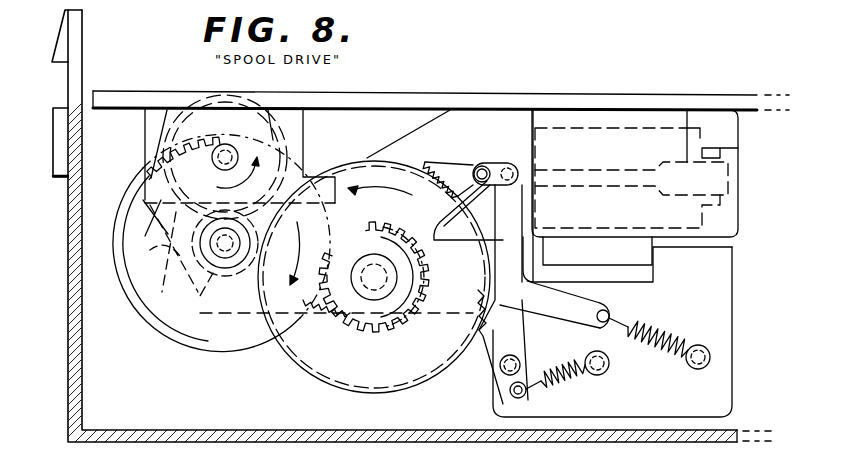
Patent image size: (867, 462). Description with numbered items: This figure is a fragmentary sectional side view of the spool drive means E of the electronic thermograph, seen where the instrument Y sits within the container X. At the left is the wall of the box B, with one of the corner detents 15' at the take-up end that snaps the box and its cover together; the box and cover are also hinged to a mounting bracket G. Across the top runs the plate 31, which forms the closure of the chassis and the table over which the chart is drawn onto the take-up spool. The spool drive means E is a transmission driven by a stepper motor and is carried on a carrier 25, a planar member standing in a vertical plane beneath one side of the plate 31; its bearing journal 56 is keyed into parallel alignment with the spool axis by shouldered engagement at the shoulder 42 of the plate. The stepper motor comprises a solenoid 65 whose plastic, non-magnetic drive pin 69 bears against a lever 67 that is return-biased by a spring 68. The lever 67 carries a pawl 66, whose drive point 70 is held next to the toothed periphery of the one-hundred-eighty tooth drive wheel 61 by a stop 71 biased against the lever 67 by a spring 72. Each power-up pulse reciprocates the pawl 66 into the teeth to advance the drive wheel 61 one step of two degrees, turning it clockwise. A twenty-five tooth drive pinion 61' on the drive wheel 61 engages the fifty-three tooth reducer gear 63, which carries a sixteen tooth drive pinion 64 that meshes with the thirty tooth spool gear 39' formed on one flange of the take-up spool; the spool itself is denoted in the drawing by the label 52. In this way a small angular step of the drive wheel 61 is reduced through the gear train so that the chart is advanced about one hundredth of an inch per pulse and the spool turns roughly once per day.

The corner detent 15' is at (91, 36).
The box B is at (68, 293).
The container X is at (67, 262).
The plate 31 is at (441, 89).
The spool gear 52 is at (200, 101).
The spool gear 39' is at (237, 144).
The reducer gear 63 is at (200, 350).
The shoulder 42 is at (159, 235).
The bearing journal 56 is at (181, 259).
The drive pinion 64 is at (193, 313).
The drive wheel 61 is at (374, 288).
The drive pinion 61' is at (374, 289).
The pawl 66 is at (471, 140).
The drive point 70 is at (445, 188).
The spring 72 is at (440, 248).
The stop 71 is at (523, 192).
The lever 67 is at (512, 221).
The solenoid 65 is at (654, 127).
The drive pin 69 is at (608, 185).
The carrier 25 is at (700, 325).
The spring 68 is at (673, 333).
The spool drive means E is at (484, 131).
The instrument Y is at (590, 93).
The mounting bracket G is at (736, 58).